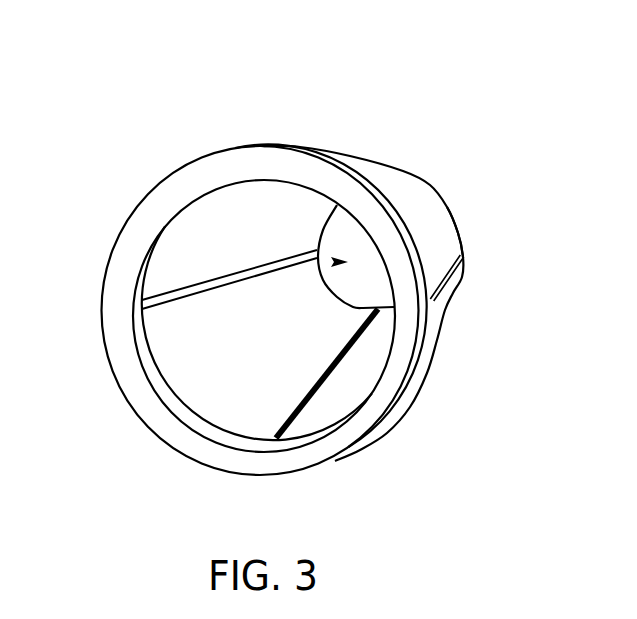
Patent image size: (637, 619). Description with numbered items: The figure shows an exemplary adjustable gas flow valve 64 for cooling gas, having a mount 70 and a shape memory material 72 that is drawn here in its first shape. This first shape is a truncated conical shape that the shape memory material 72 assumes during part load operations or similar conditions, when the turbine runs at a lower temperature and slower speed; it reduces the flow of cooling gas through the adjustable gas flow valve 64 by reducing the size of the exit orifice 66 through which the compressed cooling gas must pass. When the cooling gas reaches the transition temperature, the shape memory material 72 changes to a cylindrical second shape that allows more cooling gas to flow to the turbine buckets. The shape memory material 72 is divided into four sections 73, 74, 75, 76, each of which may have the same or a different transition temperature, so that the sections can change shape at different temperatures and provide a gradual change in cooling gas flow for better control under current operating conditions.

The adjustable gas flow valve 64 is at (372, 72).
The exit orifice 66 is at (333, 262).
The mount 70 is at (100, 342).
The shape memory material 72 is at (170, 250).
The section of the shape memory material 73 is at (433, 256).
The section of the shape memory material 74 is at (357, 373).
The section of the shape memory material 75 is at (235, 397).
The section of the shape memory material 76 is at (230, 206).